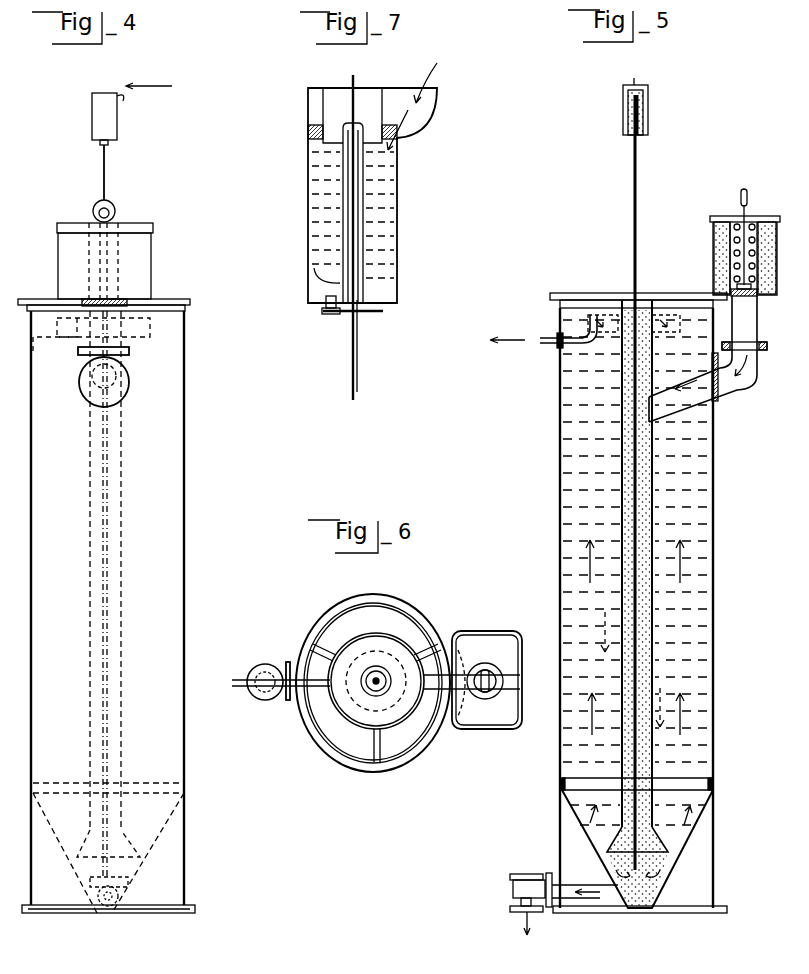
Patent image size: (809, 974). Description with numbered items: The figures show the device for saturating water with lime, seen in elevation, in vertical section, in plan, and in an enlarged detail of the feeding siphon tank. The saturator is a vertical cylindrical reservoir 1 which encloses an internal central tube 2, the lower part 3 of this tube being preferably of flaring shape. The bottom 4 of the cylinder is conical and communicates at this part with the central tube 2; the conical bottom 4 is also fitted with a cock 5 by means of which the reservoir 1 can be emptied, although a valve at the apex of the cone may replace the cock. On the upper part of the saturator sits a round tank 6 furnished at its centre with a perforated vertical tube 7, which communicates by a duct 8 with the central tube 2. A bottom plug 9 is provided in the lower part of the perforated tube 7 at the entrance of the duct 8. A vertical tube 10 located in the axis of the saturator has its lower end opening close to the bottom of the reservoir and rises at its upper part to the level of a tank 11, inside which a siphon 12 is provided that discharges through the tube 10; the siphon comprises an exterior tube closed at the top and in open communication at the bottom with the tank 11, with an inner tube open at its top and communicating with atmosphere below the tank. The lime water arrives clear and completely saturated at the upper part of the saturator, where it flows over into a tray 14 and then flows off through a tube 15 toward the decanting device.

In FIG. 4, the vertical cylindrical reservoir 1 is at (171, 473).
In FIG. 6, the vertical cylindrical reservoir 1 is at (300, 651).
In FIG. 5, the vertical cylindrical reservoir 1 is at (715, 650).
In FIG. 4, the internal central tube 2 is at (115, 563).
In FIG. 6, the internal central tube 2 is at (370, 700).
In FIG. 5, the internal central tube 2 is at (653, 530).
In FIG. 4, the lower part of central tube 3 is at (123, 840).
In FIG. 5, the lower part of central tube 3 is at (665, 842).
In FIG. 4, the conical bottom 4 is at (130, 877).
In FIG. 5, the conical bottom 4 is at (670, 865).
In FIG. 4, the cock 5 is at (130, 895).
In FIG. 6, the cock 5 is at (262, 672).
In FIG. 5, the cock 5 is at (513, 893).
In FIG. 4, the round tank 6 is at (143, 268).
In FIG. 6, the round tank 6 is at (500, 718).
In FIG. 5, the round tank 6 is at (712, 257).
In FIG. 5, the perforated vertical tube 7 is at (750, 215).
In FIG. 4, the duct 8 is at (112, 333).
In FIG. 6, the duct 8 is at (428, 692).
In FIG. 5, the duct 8 is at (740, 384).
In FIG. 5, the bottom plug 9 is at (745, 294).
In FIG. 4, the vertical tube 10 is at (105, 175).
In FIG. 7, the vertical tube 10 is at (360, 360).
In FIG. 5, the vertical tube 10 is at (638, 228).
In FIG. 4, the tank 11 is at (108, 128).
In FIG. 7, the tank 11 is at (392, 203).
In FIG. 6, the tank 11 is at (390, 673).
In FIG. 5, the tank 11 is at (650, 123).
In FIG. 7, the siphon 12 is at (364, 248).
In FIG. 4, the tray 14 is at (143, 322).
In FIG. 6, the tray 14 is at (363, 650).
In FIG. 5, the tray 14 is at (661, 318).
In FIG. 6, the tube 15 is at (330, 686).
In FIG. 5, the tube 15 is at (547, 338).